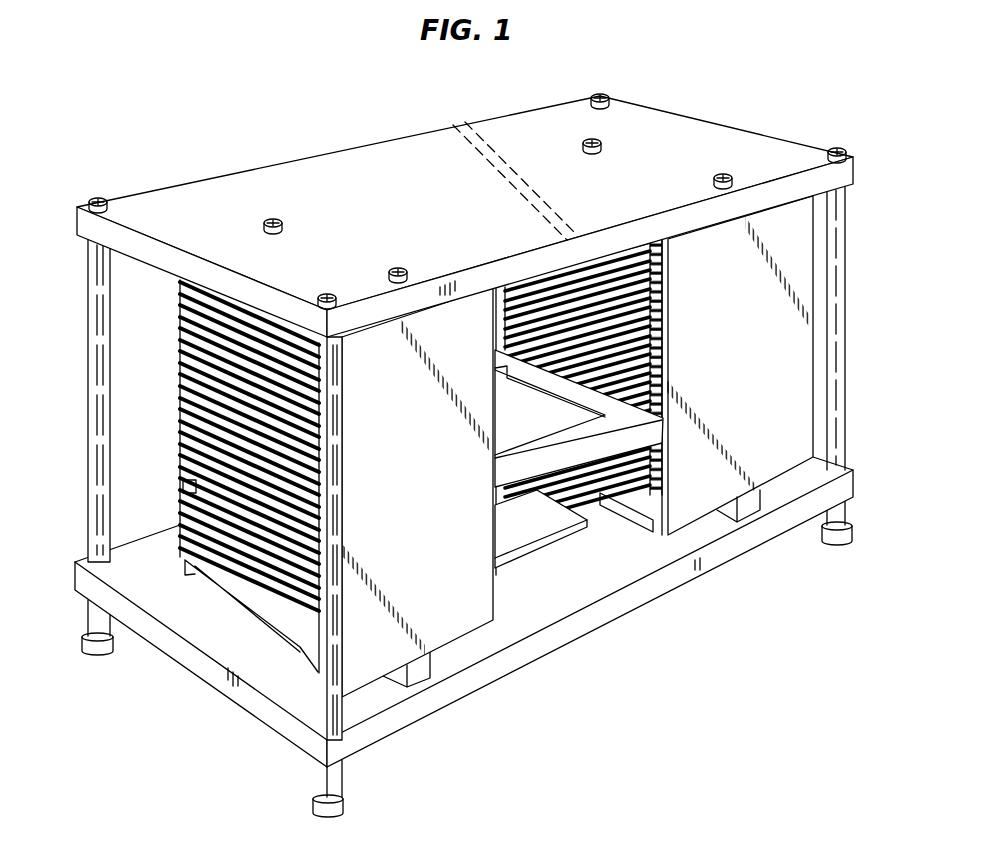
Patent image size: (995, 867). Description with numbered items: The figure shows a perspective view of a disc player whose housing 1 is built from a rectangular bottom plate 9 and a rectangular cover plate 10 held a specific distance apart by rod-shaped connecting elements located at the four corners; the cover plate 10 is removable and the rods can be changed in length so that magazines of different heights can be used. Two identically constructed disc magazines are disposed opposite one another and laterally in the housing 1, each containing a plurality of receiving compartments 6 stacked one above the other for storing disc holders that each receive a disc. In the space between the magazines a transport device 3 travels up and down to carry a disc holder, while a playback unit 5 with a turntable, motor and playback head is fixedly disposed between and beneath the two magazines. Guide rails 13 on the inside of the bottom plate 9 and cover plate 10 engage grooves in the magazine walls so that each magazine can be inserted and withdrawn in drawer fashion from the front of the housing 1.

The housing 1 is at (277, 137).
The transport device 3 is at (573, 466).
The playback unit 5 is at (535, 551).
The receiving compartments 6 is at (660, 334).
The bottom plate 9 is at (598, 622).
The cover plate 10 is at (848, 176).
The guide rails 13 is at (747, 503).